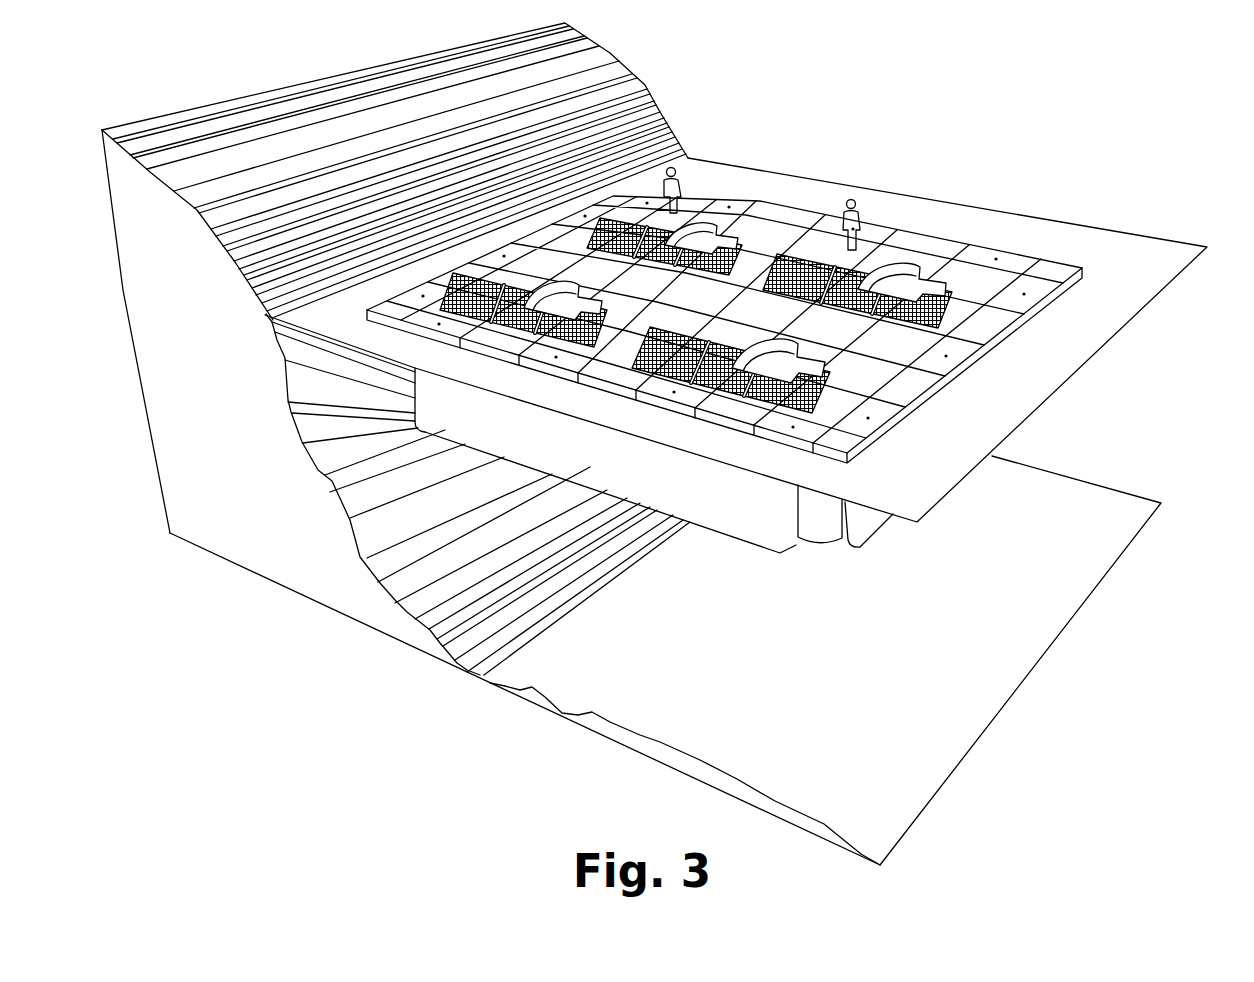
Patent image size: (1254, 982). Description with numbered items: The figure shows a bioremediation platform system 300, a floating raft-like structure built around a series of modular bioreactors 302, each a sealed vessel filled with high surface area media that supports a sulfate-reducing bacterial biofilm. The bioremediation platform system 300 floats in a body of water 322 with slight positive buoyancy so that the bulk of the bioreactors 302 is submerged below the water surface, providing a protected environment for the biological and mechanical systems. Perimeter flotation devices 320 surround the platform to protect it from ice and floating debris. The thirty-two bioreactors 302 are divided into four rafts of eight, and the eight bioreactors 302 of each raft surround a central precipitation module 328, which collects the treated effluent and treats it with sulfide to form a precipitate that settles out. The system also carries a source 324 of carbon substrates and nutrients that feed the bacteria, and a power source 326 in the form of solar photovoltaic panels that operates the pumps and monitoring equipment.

The bioremediation platform system 300 is at (775, 235).
The bioreactors 302 is at (820, 520).
The perimeter flotation devices 320 is at (613, 393).
The body of water 322 is at (1070, 378).
The source of carbon substrates 324 is at (483, 653).
The power source 326 is at (512, 334).
The central precipitation module 328 is at (920, 258).